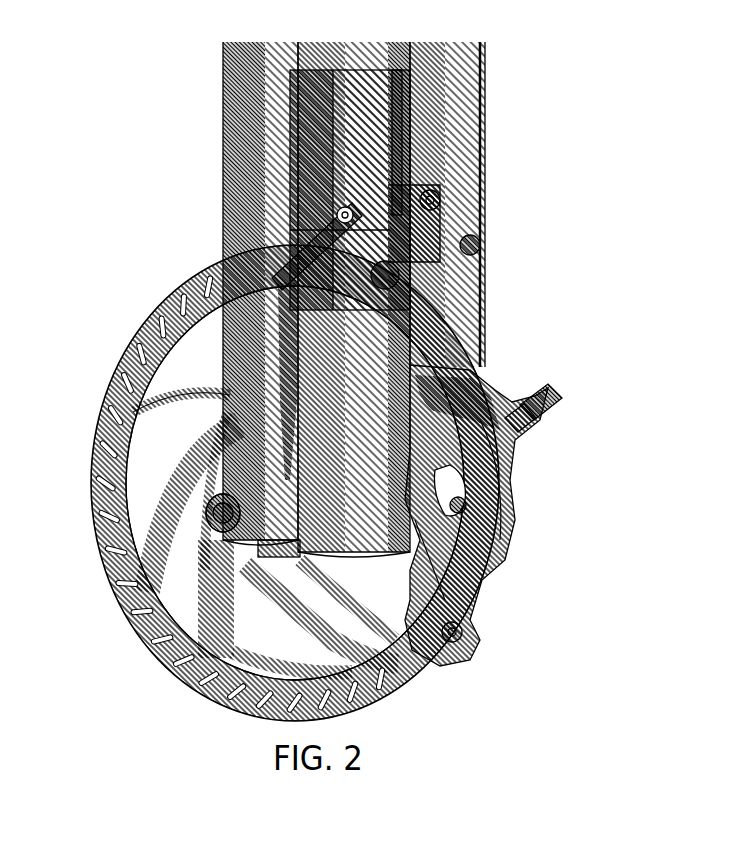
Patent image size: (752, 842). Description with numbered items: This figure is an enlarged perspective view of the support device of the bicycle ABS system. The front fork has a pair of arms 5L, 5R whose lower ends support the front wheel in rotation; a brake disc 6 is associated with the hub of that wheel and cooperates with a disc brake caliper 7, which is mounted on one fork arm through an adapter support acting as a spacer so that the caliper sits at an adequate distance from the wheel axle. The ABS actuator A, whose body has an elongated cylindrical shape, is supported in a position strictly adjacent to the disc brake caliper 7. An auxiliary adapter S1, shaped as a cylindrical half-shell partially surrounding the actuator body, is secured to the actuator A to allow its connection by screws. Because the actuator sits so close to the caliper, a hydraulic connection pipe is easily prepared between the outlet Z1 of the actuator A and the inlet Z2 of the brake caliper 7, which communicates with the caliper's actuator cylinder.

The front fork arm 5L is at (265, 122).
The front fork arm 5R is at (470, 107).
The ABS actuator A is at (378, 168).
The outlet of the actuator Z1 is at (447, 207).
The inlet of the brake caliper Z2 is at (540, 398).
The auxiliary adapter S1 is at (300, 277).
The brake disc 6 is at (108, 577).
The disc brake caliper 7 is at (504, 505).